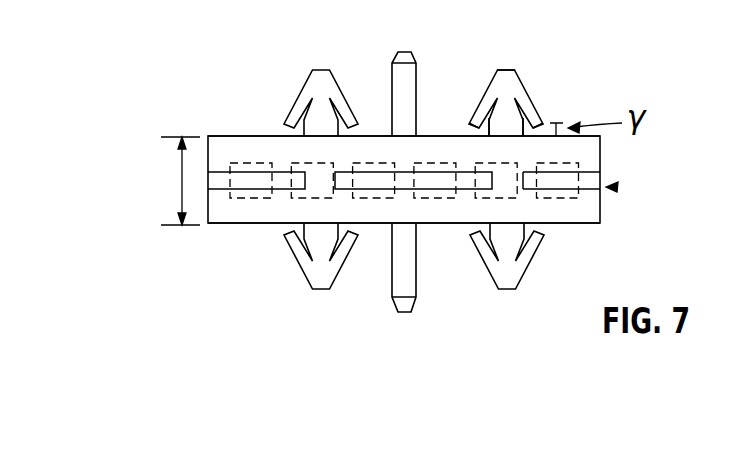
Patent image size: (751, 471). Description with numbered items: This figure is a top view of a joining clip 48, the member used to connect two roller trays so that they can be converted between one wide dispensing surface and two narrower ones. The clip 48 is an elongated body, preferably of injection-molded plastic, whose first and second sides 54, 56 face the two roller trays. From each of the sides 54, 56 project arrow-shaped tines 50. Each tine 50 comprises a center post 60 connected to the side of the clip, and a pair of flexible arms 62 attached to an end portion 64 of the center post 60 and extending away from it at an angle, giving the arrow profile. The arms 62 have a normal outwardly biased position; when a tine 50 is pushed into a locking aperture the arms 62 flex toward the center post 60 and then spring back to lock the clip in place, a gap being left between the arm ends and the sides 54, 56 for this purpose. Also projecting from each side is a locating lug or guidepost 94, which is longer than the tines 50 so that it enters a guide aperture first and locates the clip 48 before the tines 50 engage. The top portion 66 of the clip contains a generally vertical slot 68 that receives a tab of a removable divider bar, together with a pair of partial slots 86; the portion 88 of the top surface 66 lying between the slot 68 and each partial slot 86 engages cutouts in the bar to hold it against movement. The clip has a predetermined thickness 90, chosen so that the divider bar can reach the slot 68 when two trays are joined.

The joining clip 48 is at (612, 188).
The tine 50 is at (320, 68).
The first side 54 is at (442, 226).
The second side 56 is at (373, 134).
The center post 60 is at (507, 122).
The flexible arm 62 is at (476, 115).
The end portion 64 is at (514, 74).
The top portion 66 is at (252, 214).
The slot 68 is at (377, 181).
The partial slot 86 is at (223, 180).
The portion 88 is at (317, 186).
The predetermined thickness 90 is at (182, 178).
The guidepost 94 is at (414, 53).